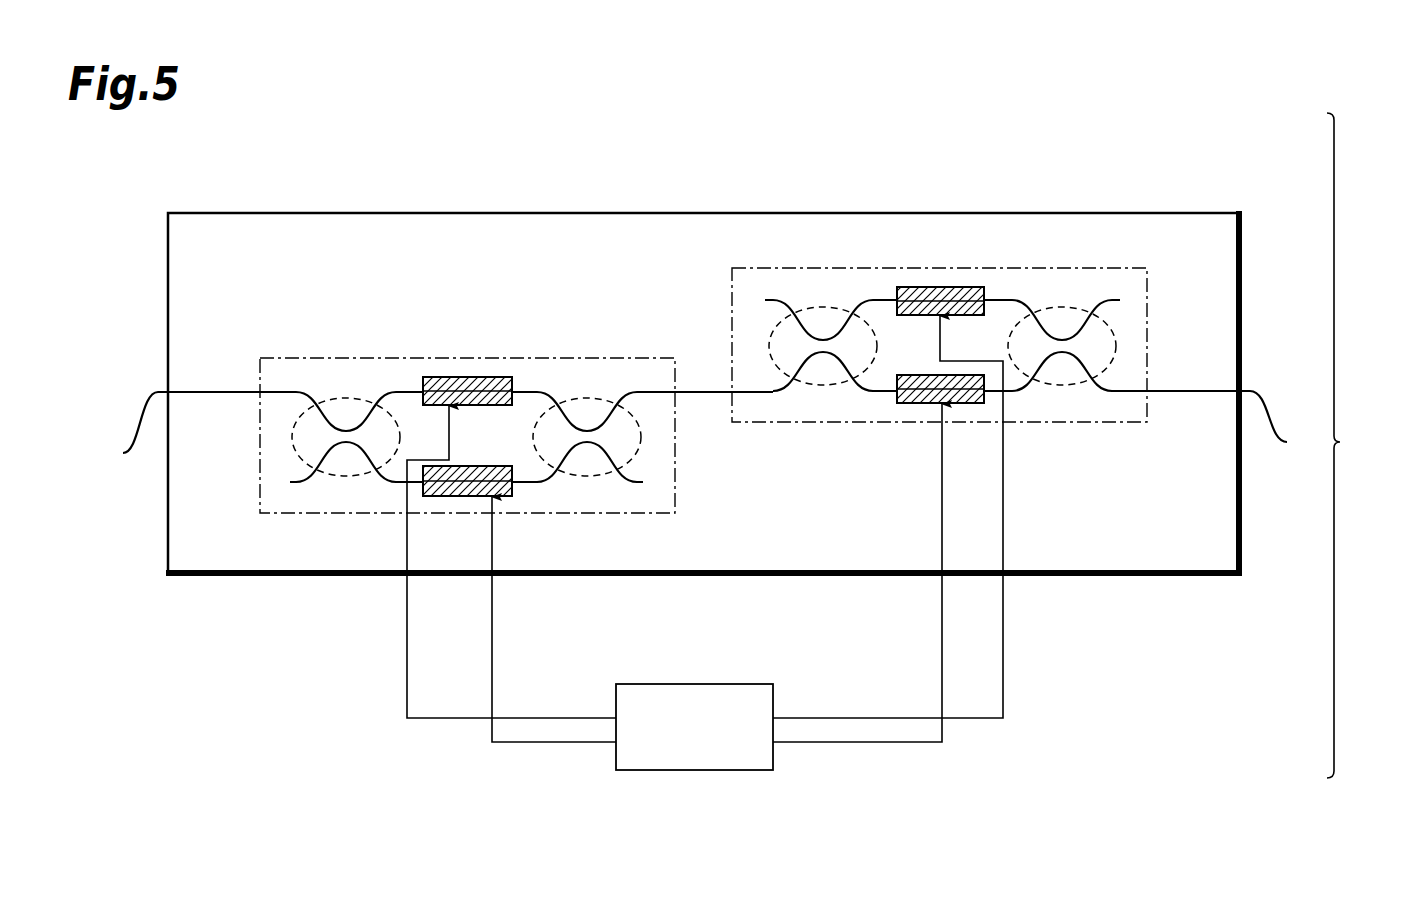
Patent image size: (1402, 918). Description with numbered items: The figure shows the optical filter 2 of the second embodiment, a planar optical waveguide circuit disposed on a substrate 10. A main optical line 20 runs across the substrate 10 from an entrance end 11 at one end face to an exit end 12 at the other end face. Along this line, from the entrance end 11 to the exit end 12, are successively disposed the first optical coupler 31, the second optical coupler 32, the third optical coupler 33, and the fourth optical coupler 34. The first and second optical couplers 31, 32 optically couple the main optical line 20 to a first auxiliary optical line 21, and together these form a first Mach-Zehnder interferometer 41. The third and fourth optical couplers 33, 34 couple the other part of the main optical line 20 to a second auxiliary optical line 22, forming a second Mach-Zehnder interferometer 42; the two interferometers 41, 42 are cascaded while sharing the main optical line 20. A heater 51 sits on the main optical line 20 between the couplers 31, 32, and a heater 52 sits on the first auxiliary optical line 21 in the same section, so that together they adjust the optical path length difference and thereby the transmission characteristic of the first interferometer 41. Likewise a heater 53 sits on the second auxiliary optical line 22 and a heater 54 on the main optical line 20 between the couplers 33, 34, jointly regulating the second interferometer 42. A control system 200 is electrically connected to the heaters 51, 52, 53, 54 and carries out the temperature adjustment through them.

The optical filter 2 is at (1340, 442).
The substrate 10 is at (395, 212).
The entrance end 11 is at (128, 432).
The exit end 12 is at (1280, 426).
The main optical line 20 is at (702, 388).
The first auxiliary optical line 21 is at (522, 484).
The second auxiliary optical line 22 is at (882, 298).
The first optical coupler 31 is at (347, 398).
The second optical coupler 32 is at (587, 397).
The third optical coupler 33 is at (808, 386).
The fourth optical coupler 34 is at (1062, 386).
The first Mach-Zehnder interferometer 41 is at (382, 358).
The second Mach-Zehnder interferometer 42 is at (870, 423).
The heater 51 is at (463, 377).
The heater 52 is at (465, 497).
The heater 53 is at (933, 287).
The heater 54 is at (952, 405).
The control system 200 is at (733, 684).